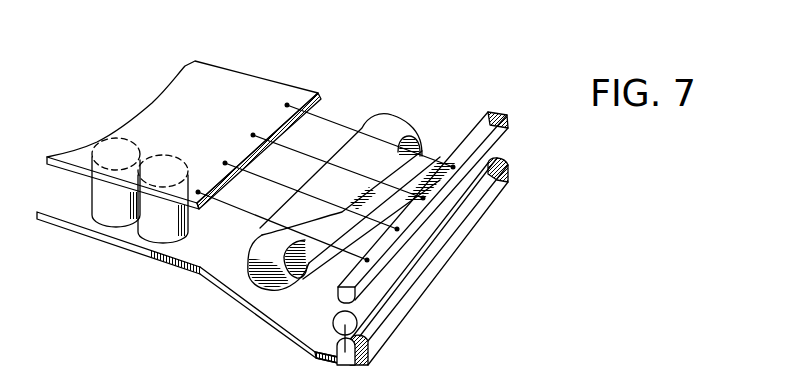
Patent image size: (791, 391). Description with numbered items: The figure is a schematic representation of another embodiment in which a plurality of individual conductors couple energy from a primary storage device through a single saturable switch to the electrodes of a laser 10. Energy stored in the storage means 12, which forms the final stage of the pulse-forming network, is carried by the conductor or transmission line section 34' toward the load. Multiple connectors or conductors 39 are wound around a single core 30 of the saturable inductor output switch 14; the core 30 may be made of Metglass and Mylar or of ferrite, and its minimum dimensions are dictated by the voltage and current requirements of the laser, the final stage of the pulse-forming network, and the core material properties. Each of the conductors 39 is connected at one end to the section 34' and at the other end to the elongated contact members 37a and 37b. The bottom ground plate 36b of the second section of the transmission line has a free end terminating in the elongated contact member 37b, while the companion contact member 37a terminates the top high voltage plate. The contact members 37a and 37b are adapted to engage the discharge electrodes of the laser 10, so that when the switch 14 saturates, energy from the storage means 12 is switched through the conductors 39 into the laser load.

The laser 10 is at (347, 369).
The storage means 12 is at (152, 233).
The saturable inductor output switch 14 is at (277, 291).
The core 30 is at (305, 270).
The transmission line section 34' is at (184, 110).
The bottom ground plate 36b is at (282, 330).
The elongated contact member 37a is at (506, 127).
The elongated contact member 37b is at (505, 188).
The connectors 39 is at (330, 152).